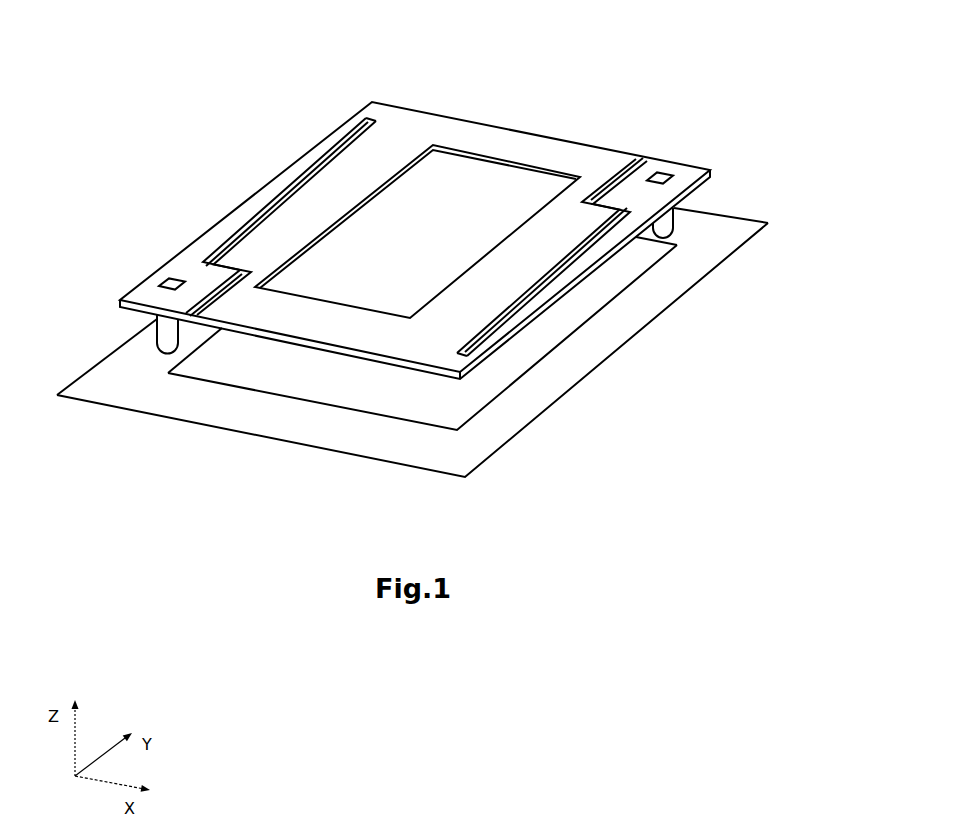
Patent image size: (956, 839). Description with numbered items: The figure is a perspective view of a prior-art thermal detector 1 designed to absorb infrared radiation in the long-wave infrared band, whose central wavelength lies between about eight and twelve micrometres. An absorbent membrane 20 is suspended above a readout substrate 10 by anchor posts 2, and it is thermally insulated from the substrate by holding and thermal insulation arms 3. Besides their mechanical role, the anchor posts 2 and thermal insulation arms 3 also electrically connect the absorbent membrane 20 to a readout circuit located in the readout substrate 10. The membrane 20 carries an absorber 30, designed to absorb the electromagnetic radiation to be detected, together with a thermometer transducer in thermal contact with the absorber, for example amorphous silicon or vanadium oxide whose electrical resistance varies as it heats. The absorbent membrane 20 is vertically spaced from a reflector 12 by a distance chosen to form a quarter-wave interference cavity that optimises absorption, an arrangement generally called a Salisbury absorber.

The thermal detector 1 is at (148, 68).
The anchor post 2 is at (150, 335).
The holding and thermal insulation arm 3 is at (185, 242).
The readout substrate 10 is at (749, 251).
The reflector 12 is at (557, 354).
The absorbent membrane 20 is at (589, 137).
The absorber 30 is at (464, 144).